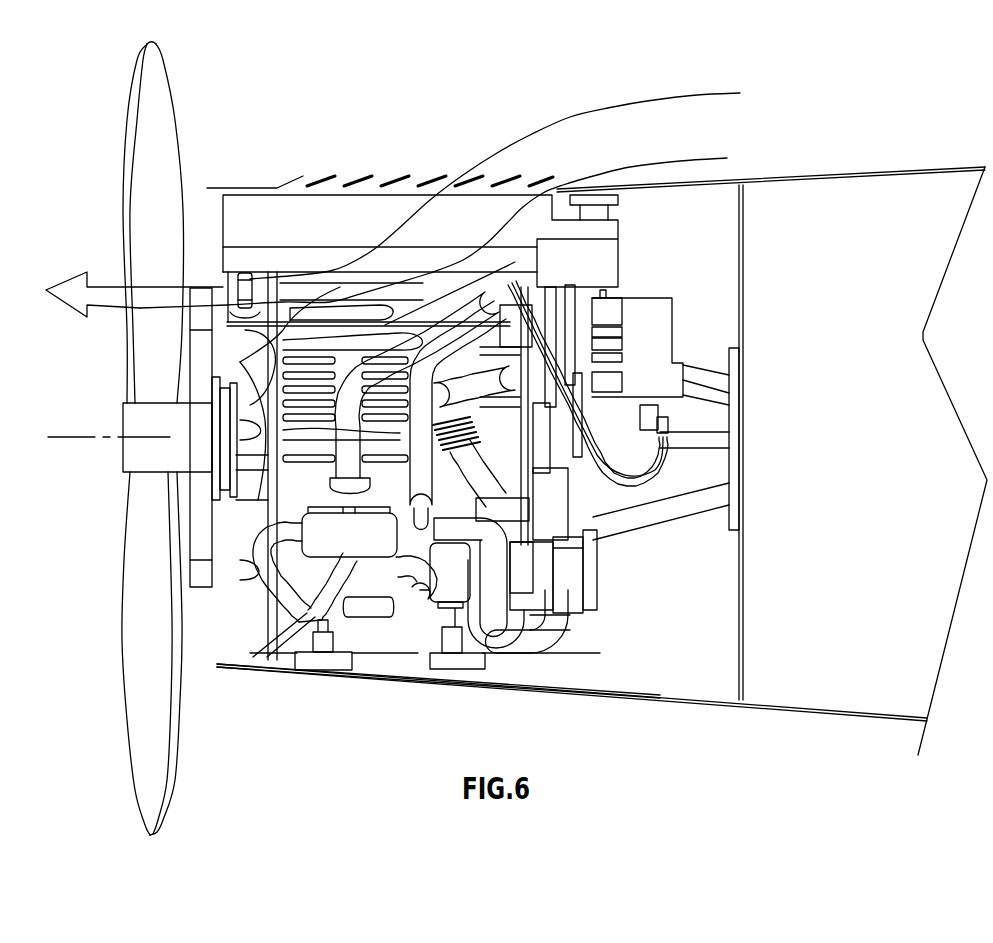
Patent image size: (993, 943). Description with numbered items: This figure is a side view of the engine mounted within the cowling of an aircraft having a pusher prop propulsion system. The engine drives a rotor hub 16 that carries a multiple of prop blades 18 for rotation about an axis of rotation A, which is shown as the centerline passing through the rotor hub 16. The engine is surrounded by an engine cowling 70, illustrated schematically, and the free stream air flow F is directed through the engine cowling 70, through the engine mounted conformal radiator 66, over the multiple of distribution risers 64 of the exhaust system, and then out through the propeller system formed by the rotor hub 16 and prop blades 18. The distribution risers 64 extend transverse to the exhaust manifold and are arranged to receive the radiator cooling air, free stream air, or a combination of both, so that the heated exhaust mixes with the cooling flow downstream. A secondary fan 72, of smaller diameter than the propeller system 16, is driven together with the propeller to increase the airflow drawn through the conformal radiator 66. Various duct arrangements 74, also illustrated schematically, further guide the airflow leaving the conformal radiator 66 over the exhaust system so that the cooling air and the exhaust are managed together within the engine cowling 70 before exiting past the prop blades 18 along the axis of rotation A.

The rotor hub 16 is at (138, 482).
The prop blades 18 is at (166, 164).
The distribution risers 64 is at (243, 273).
The conformal radiator 66 is at (342, 215).
The engine cowling 70 is at (338, 677).
The secondary fan 72 is at (200, 587).
The duct arrangements 74 is at (240, 362).
The axis of rotation A is at (70, 437).
The free stream air flow F is at (567, 117).